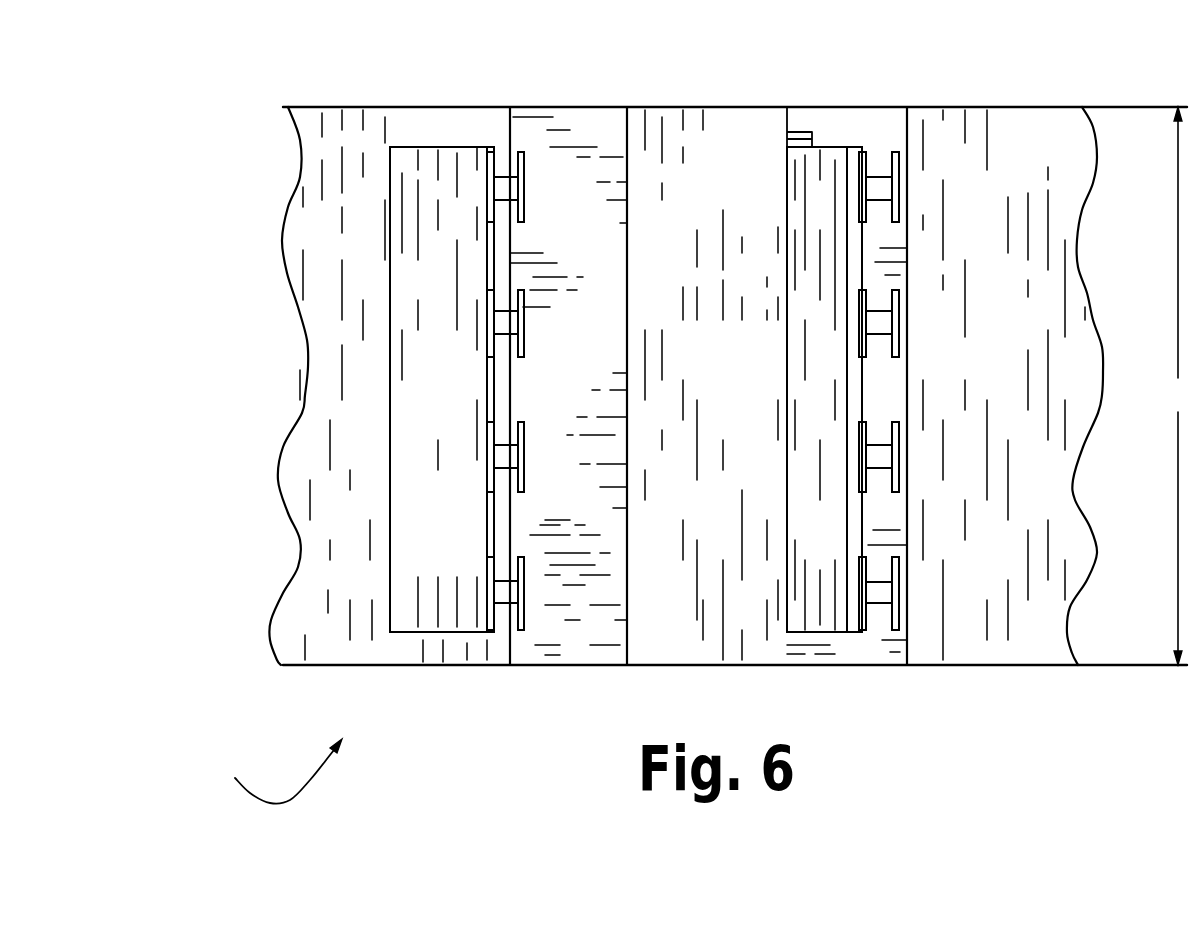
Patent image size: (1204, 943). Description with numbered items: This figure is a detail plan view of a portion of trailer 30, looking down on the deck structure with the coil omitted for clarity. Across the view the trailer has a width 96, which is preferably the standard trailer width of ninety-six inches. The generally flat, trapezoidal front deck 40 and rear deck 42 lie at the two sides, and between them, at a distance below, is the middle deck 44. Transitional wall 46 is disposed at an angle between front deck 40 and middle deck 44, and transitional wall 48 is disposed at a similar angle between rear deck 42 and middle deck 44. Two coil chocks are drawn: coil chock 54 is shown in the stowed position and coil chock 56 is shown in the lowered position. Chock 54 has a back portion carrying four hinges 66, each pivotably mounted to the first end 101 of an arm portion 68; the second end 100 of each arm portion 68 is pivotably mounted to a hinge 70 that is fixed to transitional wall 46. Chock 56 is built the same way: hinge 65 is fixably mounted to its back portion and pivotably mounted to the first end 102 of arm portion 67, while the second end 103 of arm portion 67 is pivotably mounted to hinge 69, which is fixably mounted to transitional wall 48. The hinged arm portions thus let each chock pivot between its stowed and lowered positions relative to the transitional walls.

The trailer 30 is at (273, 771).
The front deck 40 is at (323, 123).
The rear deck 42 is at (978, 120).
The middle deck 44 is at (697, 107).
The transitional wall 46 is at (540, 105).
The transitional wall 48 is at (837, 108).
The coil chock 54 is at (447, 143).
The coil chock 56 is at (812, 148).
The hinge 65 is at (865, 552).
The hinge 66 is at (487, 558).
The arm portion 67 is at (876, 605).
The arm portion 68 is at (457, 606).
The hinge 69 is at (898, 600).
The hinge 70 is at (523, 610).
The width 96 is at (1177, 386).
The second end 100 is at (515, 580).
The first end 101 is at (493, 643).
The first end 102 is at (865, 608).
The second end 103 is at (886, 575).